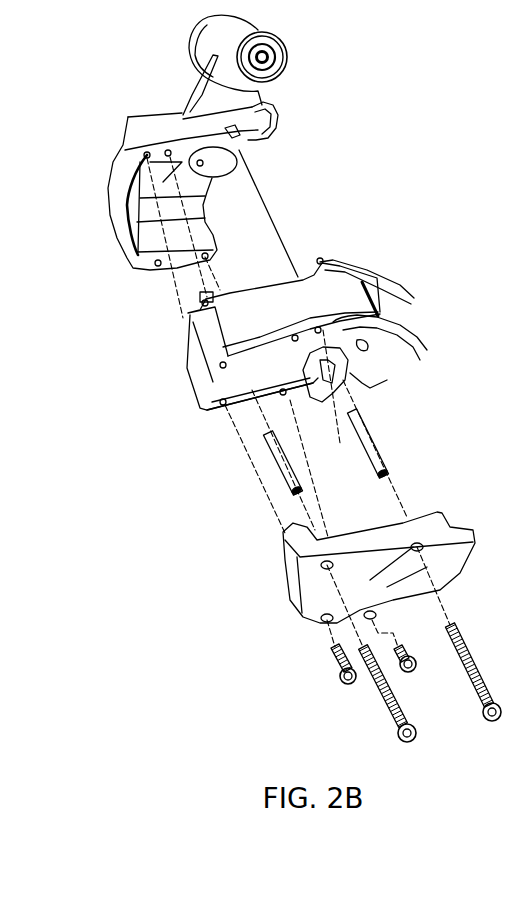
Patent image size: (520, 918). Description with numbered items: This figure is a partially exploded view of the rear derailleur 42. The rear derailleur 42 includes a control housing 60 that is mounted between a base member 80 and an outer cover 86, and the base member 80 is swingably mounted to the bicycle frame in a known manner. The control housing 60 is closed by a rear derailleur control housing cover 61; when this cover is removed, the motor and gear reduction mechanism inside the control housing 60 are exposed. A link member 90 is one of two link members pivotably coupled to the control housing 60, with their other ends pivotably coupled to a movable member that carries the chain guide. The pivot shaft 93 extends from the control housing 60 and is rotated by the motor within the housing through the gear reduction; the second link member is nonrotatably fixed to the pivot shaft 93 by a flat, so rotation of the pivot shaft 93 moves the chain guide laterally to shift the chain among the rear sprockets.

The rear derailleur 42 is at (433, 102).
The base member 80 is at (200, 87).
The link member 90 is at (400, 313).
The control housing 60 is at (190, 365).
The rear derailleur control housing cover 61 is at (217, 388).
The pivot shaft 93 is at (340, 443).
The outer cover 86 is at (293, 581).